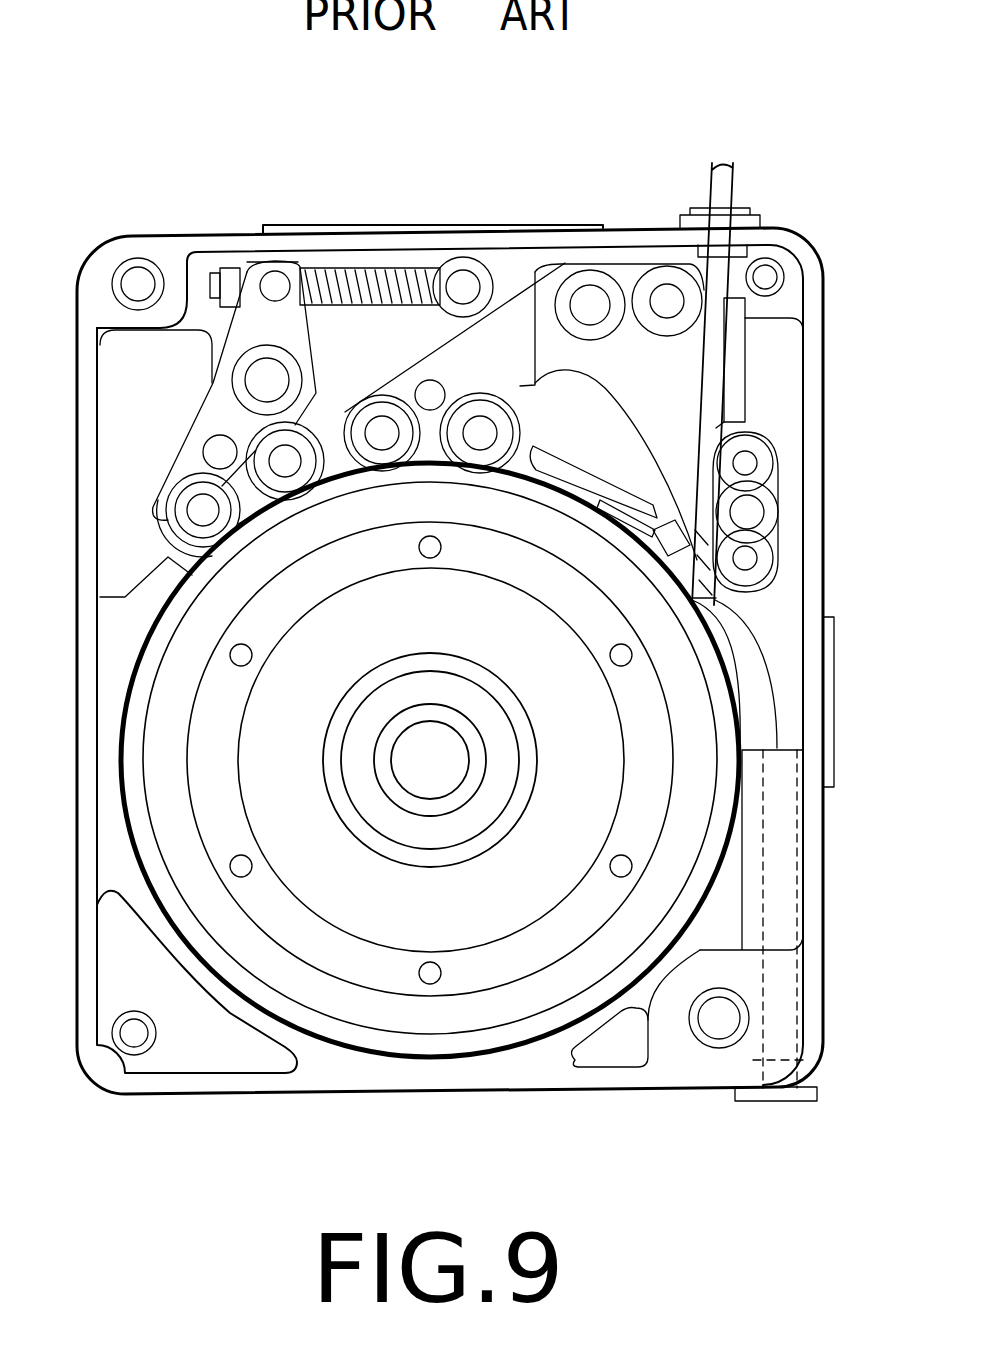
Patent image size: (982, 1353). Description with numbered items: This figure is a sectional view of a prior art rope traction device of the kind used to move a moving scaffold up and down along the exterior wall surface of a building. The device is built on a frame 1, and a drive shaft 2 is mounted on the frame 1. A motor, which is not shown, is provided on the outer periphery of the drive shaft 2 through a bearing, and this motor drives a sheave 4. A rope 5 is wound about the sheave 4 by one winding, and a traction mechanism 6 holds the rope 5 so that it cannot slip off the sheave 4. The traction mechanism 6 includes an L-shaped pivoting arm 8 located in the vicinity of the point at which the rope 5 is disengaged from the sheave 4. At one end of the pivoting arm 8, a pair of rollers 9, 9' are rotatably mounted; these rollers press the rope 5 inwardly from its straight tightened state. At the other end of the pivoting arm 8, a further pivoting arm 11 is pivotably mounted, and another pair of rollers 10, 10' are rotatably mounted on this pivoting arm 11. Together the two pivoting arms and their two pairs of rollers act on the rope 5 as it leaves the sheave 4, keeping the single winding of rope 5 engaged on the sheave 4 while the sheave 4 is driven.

The frame 1 is at (190, 244).
The drive shaft 2 is at (448, 780).
The sheave 4 is at (353, 972).
The rope 5 is at (712, 600).
The traction mechanism 6 is at (521, 262).
The pivoting arm 8 is at (688, 382).
The roller 9 is at (797, 456).
The roller 9' is at (804, 534).
The roller 10 is at (370, 300).
The roller 10' is at (533, 296).
The pivoting arm 11 is at (431, 380).